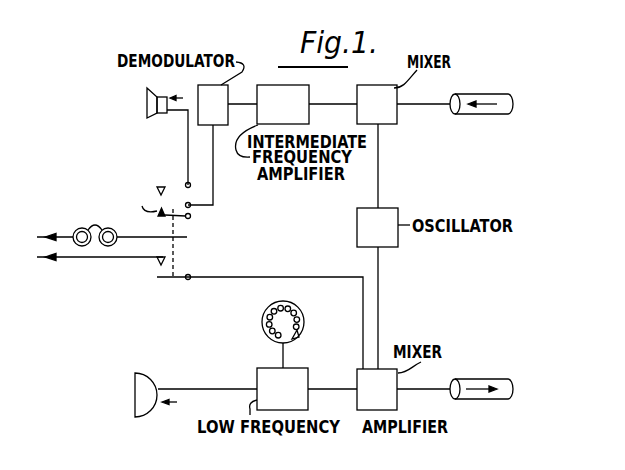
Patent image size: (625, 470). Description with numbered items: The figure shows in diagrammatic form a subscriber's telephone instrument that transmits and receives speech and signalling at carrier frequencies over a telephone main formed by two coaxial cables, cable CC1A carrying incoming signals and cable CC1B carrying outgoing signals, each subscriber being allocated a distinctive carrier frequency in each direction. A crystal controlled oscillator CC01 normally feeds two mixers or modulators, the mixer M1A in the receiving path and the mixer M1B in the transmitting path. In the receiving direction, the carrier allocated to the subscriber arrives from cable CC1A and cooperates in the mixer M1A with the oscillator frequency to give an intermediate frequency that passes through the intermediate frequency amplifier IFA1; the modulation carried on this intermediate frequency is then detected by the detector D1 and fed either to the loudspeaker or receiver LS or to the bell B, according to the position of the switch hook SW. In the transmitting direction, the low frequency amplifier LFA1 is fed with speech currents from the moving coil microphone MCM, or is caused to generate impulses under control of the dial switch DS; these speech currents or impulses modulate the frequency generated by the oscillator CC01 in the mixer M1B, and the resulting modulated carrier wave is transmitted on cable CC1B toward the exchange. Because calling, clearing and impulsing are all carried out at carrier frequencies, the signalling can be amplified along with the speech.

The loudspeaker or receiver LS is at (151, 103).
The detector D1 is at (213, 105).
The intermediate frequency amplifier IFA1 is at (283, 104).
The mixer M1A is at (377, 104).
The coaxial cable CC1A is at (481, 96).
The crystal controlled oscillator CC01 is at (378, 227).
The switch hook SW is at (143, 198).
The bell B is at (95, 227).
The dial switch DS is at (298, 334).
The moving coil microphone MCM is at (147, 385).
The low frequency amplifier LFA1 is at (282, 389).
The mixer M1B is at (377, 389).
The coaxial cable CC1B is at (481, 380).